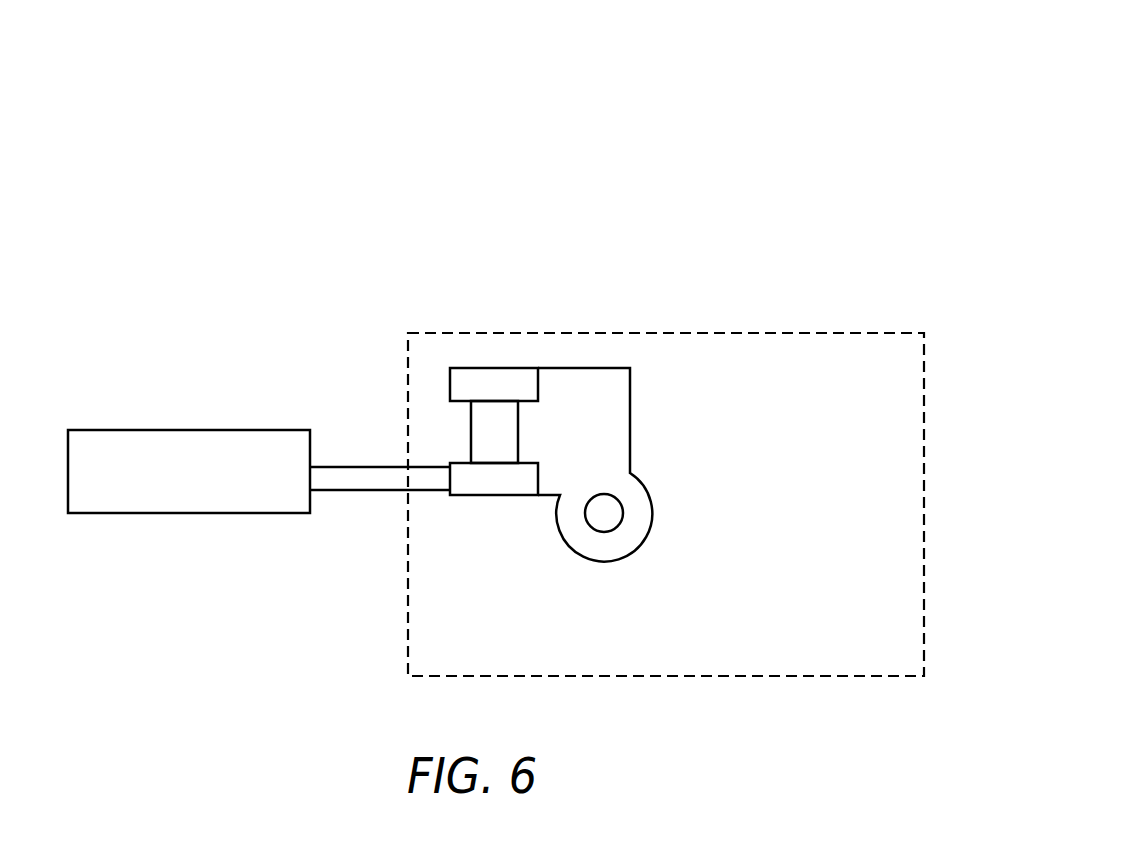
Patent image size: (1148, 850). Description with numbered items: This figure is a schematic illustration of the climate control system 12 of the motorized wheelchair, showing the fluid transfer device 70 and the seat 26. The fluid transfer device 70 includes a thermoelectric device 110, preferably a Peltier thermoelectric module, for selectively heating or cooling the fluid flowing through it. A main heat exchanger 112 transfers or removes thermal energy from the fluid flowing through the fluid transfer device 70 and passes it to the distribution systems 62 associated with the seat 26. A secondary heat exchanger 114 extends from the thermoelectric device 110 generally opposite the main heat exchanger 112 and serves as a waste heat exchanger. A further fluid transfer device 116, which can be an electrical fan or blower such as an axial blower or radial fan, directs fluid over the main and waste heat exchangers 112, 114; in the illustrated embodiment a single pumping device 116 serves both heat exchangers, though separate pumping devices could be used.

The climate control system 12 is at (757, 87).
The seat 26 is at (343, 383).
The distribution systems 62 is at (183, 497).
The fluid transfer device 70 is at (666, 467).
The thermoelectric device 110 is at (471, 432).
The main heat exchanger 112 is at (460, 497).
The secondary heat exchanger 114 is at (495, 368).
The fluid transfer device 116 is at (653, 492).